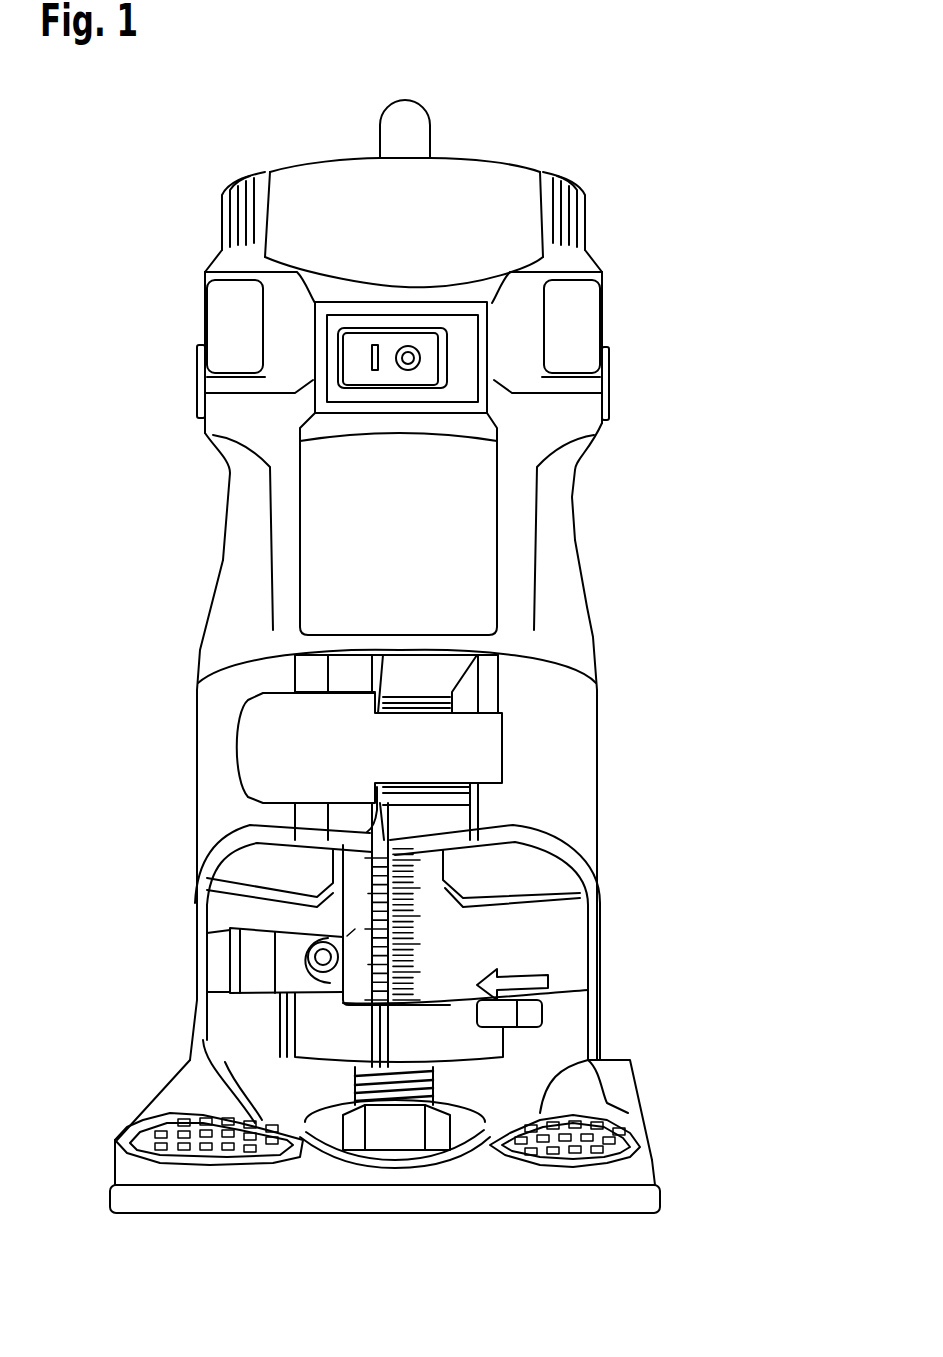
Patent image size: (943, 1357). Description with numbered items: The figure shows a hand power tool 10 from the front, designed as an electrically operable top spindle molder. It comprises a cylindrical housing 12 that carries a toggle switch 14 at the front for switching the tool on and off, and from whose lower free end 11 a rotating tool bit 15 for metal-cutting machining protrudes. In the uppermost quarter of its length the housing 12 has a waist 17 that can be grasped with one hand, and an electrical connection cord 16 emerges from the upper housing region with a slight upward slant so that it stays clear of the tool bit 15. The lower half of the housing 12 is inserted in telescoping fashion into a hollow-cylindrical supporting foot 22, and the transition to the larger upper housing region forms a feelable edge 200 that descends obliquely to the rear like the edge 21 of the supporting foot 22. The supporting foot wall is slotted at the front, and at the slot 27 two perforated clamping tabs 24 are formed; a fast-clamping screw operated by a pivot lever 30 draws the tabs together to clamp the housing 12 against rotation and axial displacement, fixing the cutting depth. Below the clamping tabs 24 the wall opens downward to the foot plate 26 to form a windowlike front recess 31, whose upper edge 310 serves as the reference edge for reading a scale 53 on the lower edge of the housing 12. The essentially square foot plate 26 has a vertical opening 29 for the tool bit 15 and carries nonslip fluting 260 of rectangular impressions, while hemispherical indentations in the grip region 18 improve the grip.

The hand power tool 10 is at (502, 104).
The lower free end 11 is at (462, 1043).
The housing 12 is at (607, 425).
The toggle switch 14 is at (427, 347).
The tool bit 15 is at (397, 1137).
The electrical connection cord 16 is at (398, 105).
The waist 17 is at (579, 480).
The grip region 18 is at (594, 622).
The edge 21 is at (517, 670).
The supporting foot 22 is at (620, 982).
The clamping tabs 24 is at (400, 682).
The foot plate 26 is at (670, 1168).
The slot 27 is at (367, 832).
The vertical opening 29 is at (325, 1117).
The pivot lever 30 is at (470, 747).
The windowlike front recess 31 is at (560, 1038).
The scale 53 is at (460, 940).
The edge 200 is at (558, 683).
The fluting 260 is at (160, 1123).
The upper edge 310 is at (225, 870).